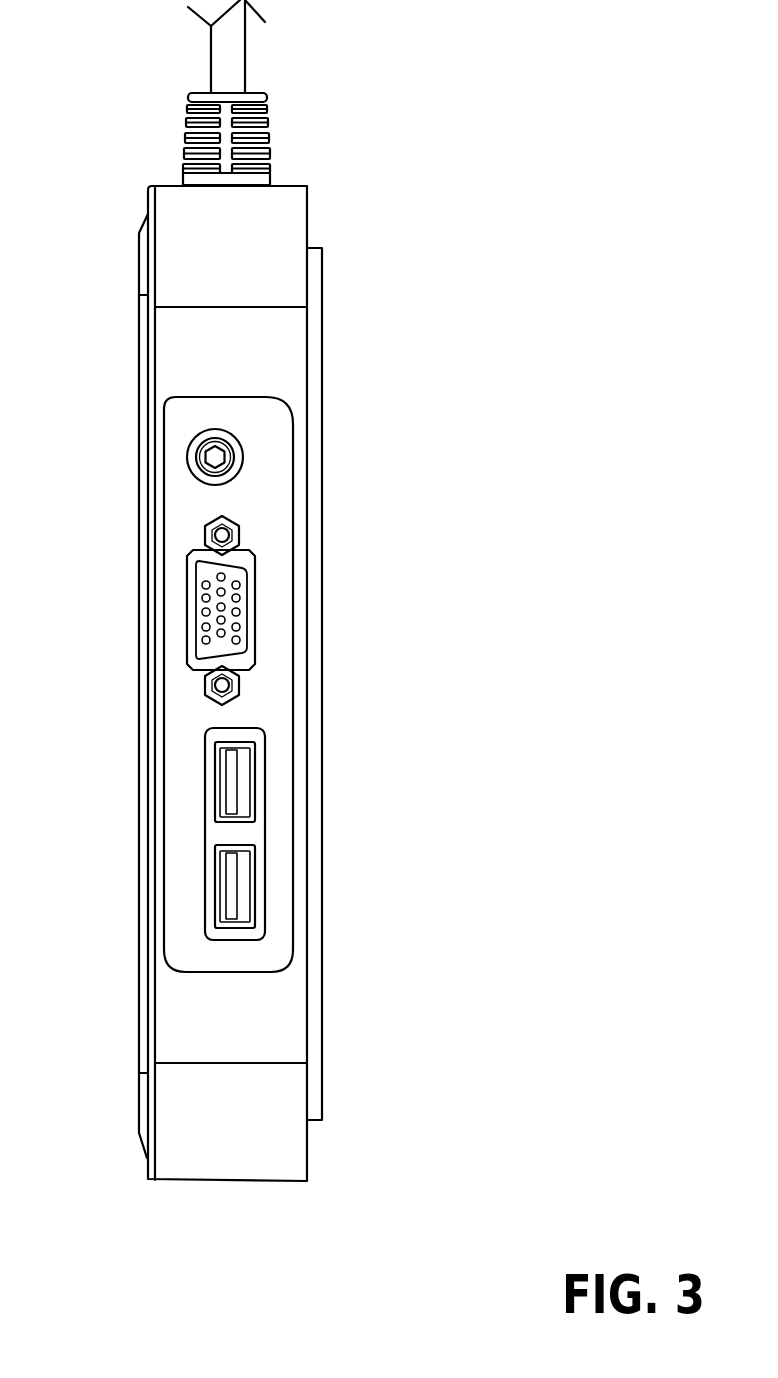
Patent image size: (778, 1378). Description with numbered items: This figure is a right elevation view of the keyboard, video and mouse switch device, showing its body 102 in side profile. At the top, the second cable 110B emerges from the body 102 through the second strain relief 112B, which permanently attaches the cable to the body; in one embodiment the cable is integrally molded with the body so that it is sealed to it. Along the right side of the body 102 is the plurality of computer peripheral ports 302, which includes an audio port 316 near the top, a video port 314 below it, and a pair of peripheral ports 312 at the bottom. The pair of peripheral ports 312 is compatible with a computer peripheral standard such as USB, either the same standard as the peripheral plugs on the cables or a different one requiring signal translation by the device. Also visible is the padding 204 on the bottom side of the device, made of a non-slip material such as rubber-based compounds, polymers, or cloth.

The second cable 110B is at (245, 62).
The second strain relief 112B is at (267, 153).
The body 102 is at (147, 1160).
The padding 204 is at (322, 277).
The plurality of computer peripheral ports 302 is at (270, 356).
The audio port 316 is at (244, 457).
The video port 314 is at (255, 595).
The pair of peripheral ports 312 is at (265, 837).